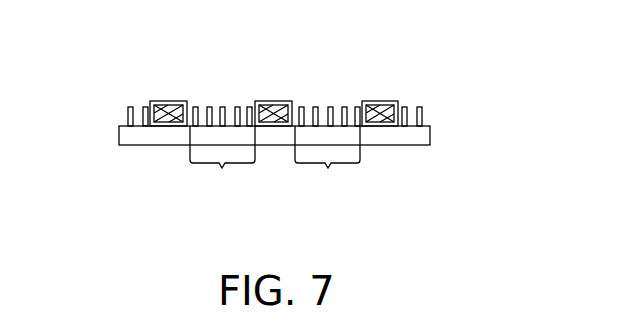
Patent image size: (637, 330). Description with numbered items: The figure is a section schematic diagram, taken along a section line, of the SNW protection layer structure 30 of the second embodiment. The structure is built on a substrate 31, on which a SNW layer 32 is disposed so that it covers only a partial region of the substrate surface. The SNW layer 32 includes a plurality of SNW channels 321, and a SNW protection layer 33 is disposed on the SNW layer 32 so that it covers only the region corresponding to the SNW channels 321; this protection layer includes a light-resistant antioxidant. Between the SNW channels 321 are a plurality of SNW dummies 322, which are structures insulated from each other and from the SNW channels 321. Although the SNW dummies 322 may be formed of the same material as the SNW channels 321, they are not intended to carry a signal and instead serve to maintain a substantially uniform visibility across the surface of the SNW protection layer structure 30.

The SNW protection layer structure 30 is at (88, 45).
The substrate 31 is at (415, 138).
The SNW layer 32 is at (422, 113).
The SNW channels 321 is at (160, 101).
The SNW dummies 322 is at (275, 163).
The SNW protection layer 33 is at (399, 102).